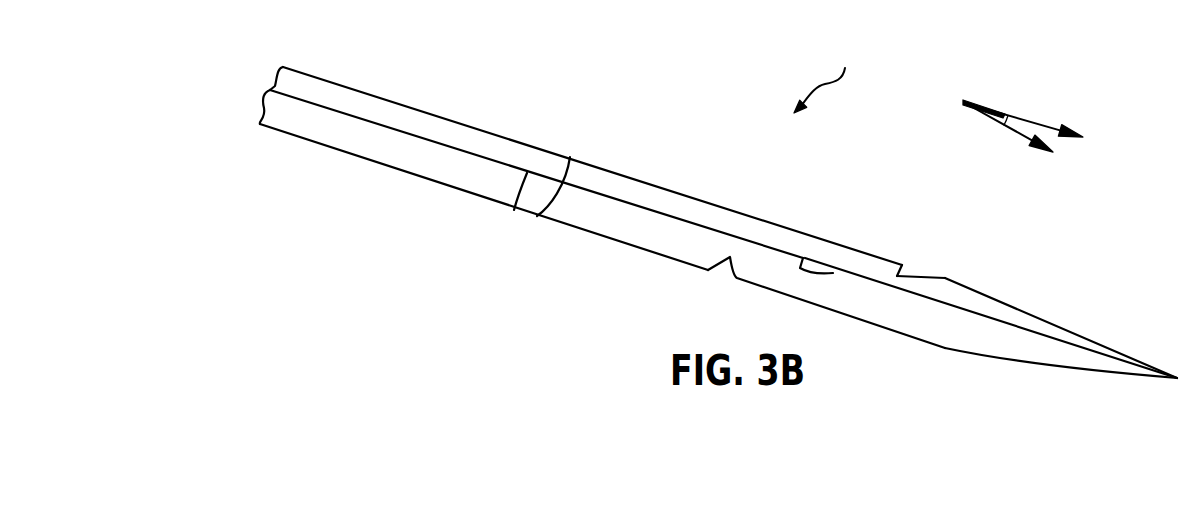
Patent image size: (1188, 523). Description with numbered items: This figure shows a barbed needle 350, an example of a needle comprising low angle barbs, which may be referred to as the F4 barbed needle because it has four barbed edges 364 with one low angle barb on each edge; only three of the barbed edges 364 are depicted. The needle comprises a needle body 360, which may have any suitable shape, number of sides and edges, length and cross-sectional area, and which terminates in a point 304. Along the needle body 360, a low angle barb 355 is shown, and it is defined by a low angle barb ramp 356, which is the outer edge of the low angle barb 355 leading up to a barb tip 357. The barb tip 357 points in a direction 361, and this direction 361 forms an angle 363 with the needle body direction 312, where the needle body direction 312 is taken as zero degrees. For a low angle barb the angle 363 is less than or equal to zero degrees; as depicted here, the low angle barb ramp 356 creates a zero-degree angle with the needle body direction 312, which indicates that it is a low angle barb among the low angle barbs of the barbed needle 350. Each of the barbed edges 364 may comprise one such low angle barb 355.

The point 304 is at (1133, 360).
The needle body direction 312 is at (983, 104).
The barbed needle 350 is at (829, 77).
The low angle barb 355 is at (803, 262).
The low angle barb ramp 356 is at (905, 262).
The barb tip 357 is at (903, 268).
The needle body 360 is at (667, 202).
The direction 361 is at (1012, 135).
The angle 363 is at (1018, 120).
The barbed edges 364 is at (470, 195).